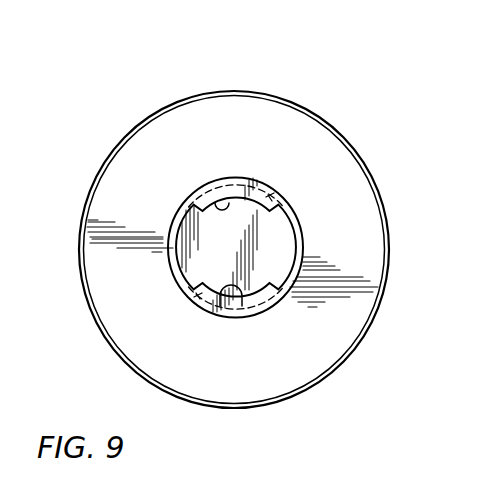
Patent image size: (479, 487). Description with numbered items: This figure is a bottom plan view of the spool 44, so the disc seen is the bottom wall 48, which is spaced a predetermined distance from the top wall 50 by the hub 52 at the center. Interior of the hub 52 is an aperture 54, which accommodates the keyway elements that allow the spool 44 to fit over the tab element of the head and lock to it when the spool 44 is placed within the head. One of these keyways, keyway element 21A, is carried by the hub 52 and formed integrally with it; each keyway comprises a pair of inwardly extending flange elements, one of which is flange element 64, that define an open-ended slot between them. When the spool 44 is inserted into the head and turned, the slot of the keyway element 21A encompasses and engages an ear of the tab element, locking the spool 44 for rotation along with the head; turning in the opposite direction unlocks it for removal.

The spool 44 is at (248, 222).
The bottom wall 48 is at (253, 95).
The top wall 50 is at (315, 113).
The hub 52 is at (62, 284).
The aperture 54 is at (283, 235).
The keyway element 21A is at (216, 204).
The flange element 64 is at (238, 292).